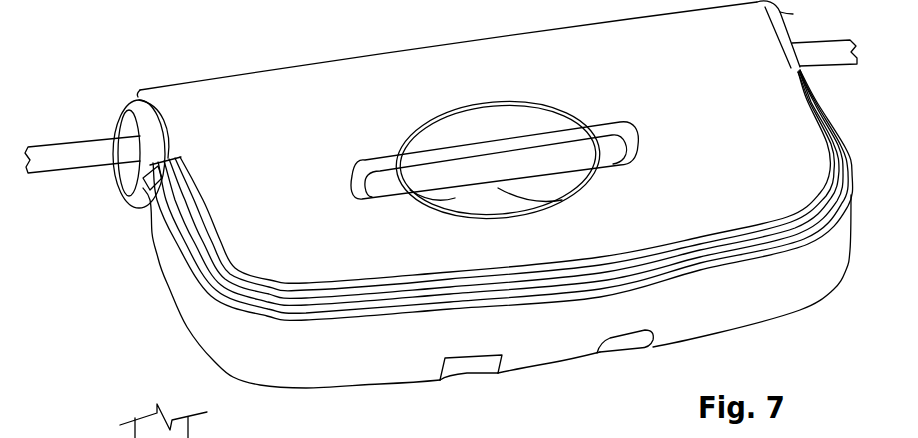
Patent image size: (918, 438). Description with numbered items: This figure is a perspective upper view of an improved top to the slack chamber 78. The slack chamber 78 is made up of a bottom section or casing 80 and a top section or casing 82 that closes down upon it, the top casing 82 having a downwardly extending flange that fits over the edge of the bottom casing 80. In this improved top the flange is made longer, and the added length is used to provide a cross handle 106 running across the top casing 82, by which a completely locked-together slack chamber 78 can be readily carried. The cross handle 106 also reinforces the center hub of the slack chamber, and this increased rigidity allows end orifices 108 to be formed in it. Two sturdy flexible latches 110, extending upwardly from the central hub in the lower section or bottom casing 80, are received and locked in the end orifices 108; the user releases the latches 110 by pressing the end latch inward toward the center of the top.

The slack chamber 78 is at (137, 300).
The bottom section or casing 80 is at (262, 357).
The top section or casing 82 is at (277, 85).
The cross handle 106 is at (477, 160).
The end orifices 108 is at (363, 163).
The flexible latches 110 is at (388, 183).